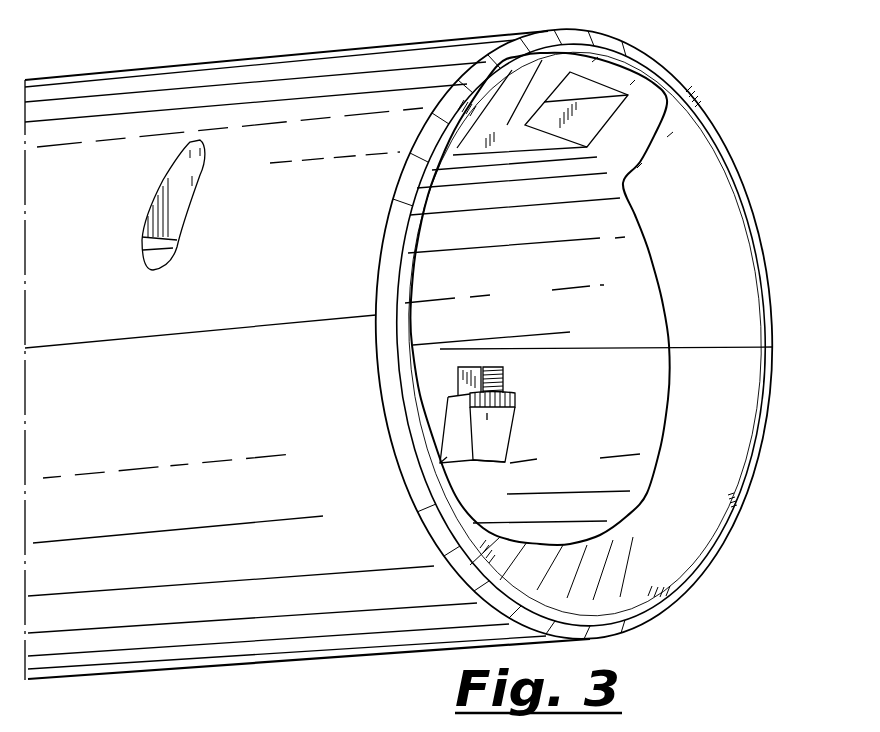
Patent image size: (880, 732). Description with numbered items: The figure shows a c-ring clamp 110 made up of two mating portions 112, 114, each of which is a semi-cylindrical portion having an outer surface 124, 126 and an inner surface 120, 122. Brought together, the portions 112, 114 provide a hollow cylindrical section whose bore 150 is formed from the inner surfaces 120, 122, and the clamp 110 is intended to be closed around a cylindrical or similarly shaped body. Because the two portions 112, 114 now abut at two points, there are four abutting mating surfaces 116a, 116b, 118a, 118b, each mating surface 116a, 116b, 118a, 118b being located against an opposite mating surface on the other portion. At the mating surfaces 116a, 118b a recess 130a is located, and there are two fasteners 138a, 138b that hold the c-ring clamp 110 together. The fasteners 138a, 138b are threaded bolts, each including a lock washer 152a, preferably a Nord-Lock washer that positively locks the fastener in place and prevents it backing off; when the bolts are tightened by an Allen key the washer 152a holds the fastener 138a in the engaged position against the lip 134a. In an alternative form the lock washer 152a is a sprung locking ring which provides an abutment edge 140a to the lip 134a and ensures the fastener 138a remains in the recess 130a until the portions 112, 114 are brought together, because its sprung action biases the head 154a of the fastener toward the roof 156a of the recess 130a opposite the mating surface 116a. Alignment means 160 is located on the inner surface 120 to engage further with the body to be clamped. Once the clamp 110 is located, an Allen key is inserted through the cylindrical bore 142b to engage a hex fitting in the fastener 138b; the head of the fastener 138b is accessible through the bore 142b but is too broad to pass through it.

The c-ring clamp 110 is at (722, 136).
The mating portion 112 is at (760, 466).
The mating portion 114 is at (768, 285).
The mating surface 116a is at (740, 355).
The mating surface 116b is at (397, 313).
The mating surface 118a is at (740, 355).
The mating surface 118b is at (397, 313).
The inner surface 120 is at (633, 588).
The inner surface 122 is at (657, 105).
The outer surface 124 is at (703, 566).
The outer surface 126 is at (746, 197).
The recess 130a is at (450, 438).
The lip 134a is at (453, 383).
The fastener 138a is at (500, 449).
The fastener 138b is at (150, 266).
The abutment edge 140a is at (506, 378).
The cylindrical bore 142b is at (190, 170).
The bore 150 is at (522, 335).
The lock washer 152a is at (513, 392).
The head 154a is at (498, 462).
The roof 156a is at (447, 489).
The alignment means 160 is at (576, 89).